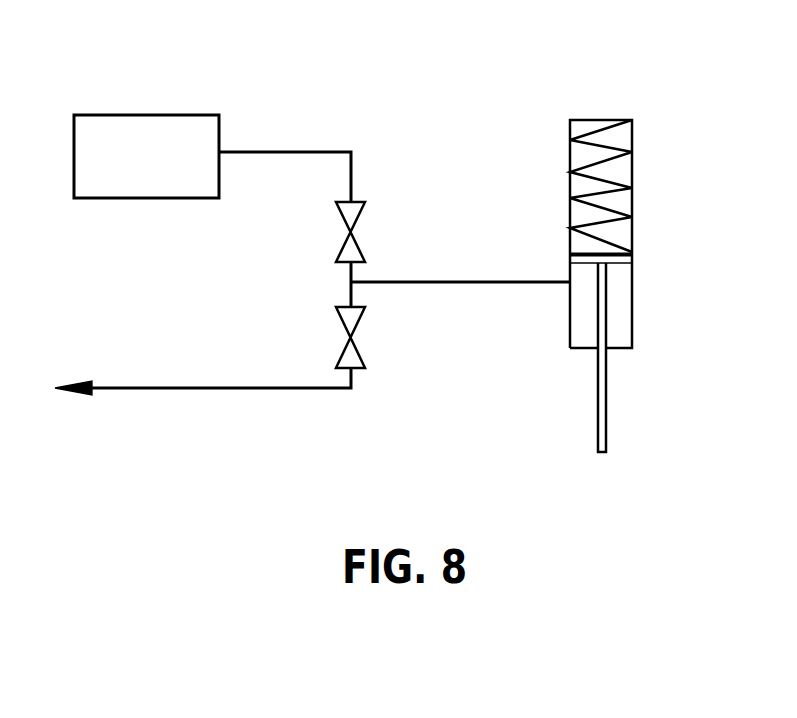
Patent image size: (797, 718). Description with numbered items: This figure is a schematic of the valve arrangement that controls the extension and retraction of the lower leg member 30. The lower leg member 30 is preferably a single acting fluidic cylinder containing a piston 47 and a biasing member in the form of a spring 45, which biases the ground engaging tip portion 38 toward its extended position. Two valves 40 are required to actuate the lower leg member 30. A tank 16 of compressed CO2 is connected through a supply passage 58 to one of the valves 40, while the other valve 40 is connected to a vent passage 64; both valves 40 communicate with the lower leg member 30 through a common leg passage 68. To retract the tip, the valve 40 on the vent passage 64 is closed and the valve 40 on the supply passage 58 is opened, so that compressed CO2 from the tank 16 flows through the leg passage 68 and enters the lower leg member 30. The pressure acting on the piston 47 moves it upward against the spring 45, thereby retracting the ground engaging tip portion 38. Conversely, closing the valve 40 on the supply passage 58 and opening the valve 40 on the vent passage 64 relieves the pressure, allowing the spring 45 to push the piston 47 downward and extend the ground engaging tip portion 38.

The tank 16 is at (123, 115).
The supply passage 58 is at (263, 150).
The valves 40 is at (342, 242).
The leg passage 68 is at (430, 280).
The vent passage 64 is at (190, 387).
The lower leg member 30 is at (635, 137).
The spring 45 is at (607, 197).
The piston 47 is at (612, 262).
The ground engaging tip portion 38 is at (607, 417).